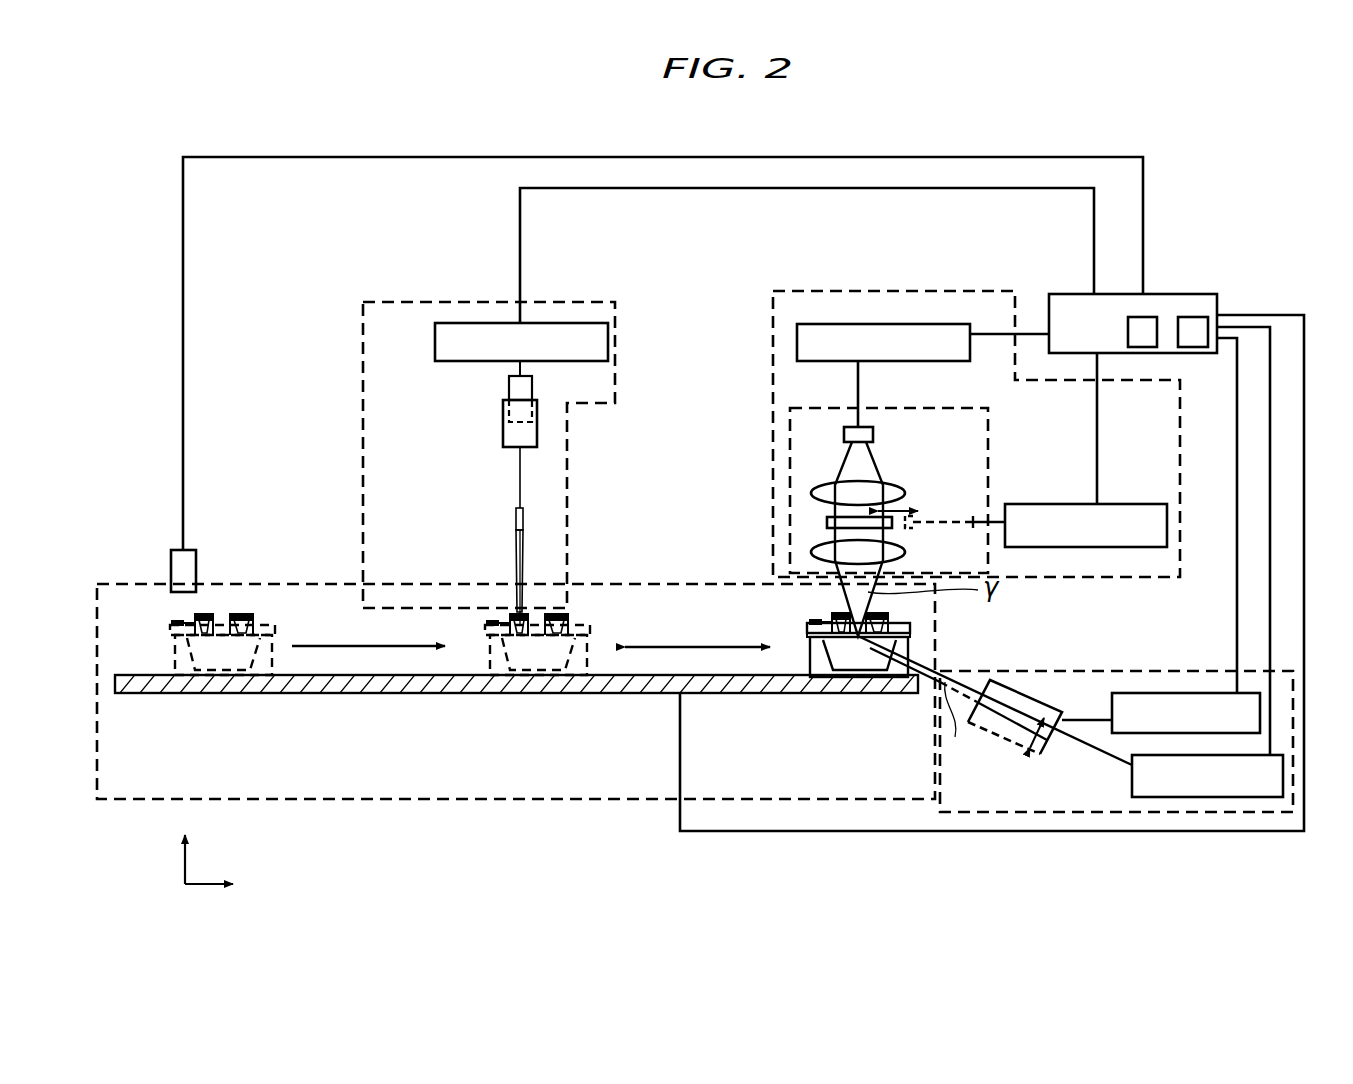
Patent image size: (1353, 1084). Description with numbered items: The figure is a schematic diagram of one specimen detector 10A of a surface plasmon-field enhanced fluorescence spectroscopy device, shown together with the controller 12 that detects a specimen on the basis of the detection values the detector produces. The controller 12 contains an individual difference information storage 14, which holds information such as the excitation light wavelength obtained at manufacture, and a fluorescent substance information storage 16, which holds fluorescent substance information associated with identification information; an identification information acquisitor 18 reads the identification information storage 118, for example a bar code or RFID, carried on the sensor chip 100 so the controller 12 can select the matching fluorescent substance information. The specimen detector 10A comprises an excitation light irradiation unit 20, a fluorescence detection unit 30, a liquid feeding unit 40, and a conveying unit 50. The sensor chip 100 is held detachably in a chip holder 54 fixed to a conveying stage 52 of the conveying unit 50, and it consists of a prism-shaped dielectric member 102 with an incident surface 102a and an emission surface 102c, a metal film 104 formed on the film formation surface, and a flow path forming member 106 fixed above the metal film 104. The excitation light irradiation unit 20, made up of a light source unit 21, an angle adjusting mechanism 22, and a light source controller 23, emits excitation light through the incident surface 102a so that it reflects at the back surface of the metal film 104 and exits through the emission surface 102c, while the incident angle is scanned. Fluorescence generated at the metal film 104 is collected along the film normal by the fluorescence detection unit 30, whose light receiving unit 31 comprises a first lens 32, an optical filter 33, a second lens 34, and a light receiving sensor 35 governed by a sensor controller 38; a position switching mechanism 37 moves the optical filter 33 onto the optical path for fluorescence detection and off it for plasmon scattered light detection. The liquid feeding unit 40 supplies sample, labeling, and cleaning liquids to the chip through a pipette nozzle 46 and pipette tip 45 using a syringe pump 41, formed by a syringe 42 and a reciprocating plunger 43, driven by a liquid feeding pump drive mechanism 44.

The specimen detector 10A is at (972, 140).
The controller 12 is at (1078, 300).
The individual difference information storage 14 is at (1146, 332).
The fluorescent substance information storage 16 is at (1190, 332).
The identification information acquisitor 18 is at (171, 562).
The excitation light irradiation unit 20 is at (1115, 812).
The light source unit 21 is at (1012, 724).
The angle adjusting mechanism 22 is at (1112, 702).
The light source controller 23 is at (1202, 797).
The fluorescence detection unit 30 is at (975, 291).
The light receiving unit 31 is at (790, 414).
The first lens 32 is at (815, 550).
The optical filter 33 is at (827, 522).
The second lens 34 is at (815, 490).
The light receiving sensor 35 is at (844, 433).
The position switching mechanism 37 is at (1140, 504).
The sensor controller 38 is at (857, 323).
The liquid feeding unit 40 is at (408, 300).
The syringe pump 41 is at (448, 387).
The syringe 42 is at (505, 436).
The plunger 43 is at (510, 396).
The liquid feeding pump drive mechanism 44 is at (435, 335).
The pipette tip 45 is at (518, 548).
The pipette nozzle 46 is at (516, 520).
The conveying unit 50 is at (525, 799).
The conveying stage 52 is at (710, 693).
The chip holder 54 is at (808, 662).
The sensor chip 100 is at (972, 600).
The dielectric member 102 is at (908, 628).
The incident surface 102a is at (898, 650).
The emission surface 102c is at (827, 650).
The metal film 104 is at (905, 642).
The flow path forming member 106 is at (888, 620).
The identification information storage 118 is at (812, 622).